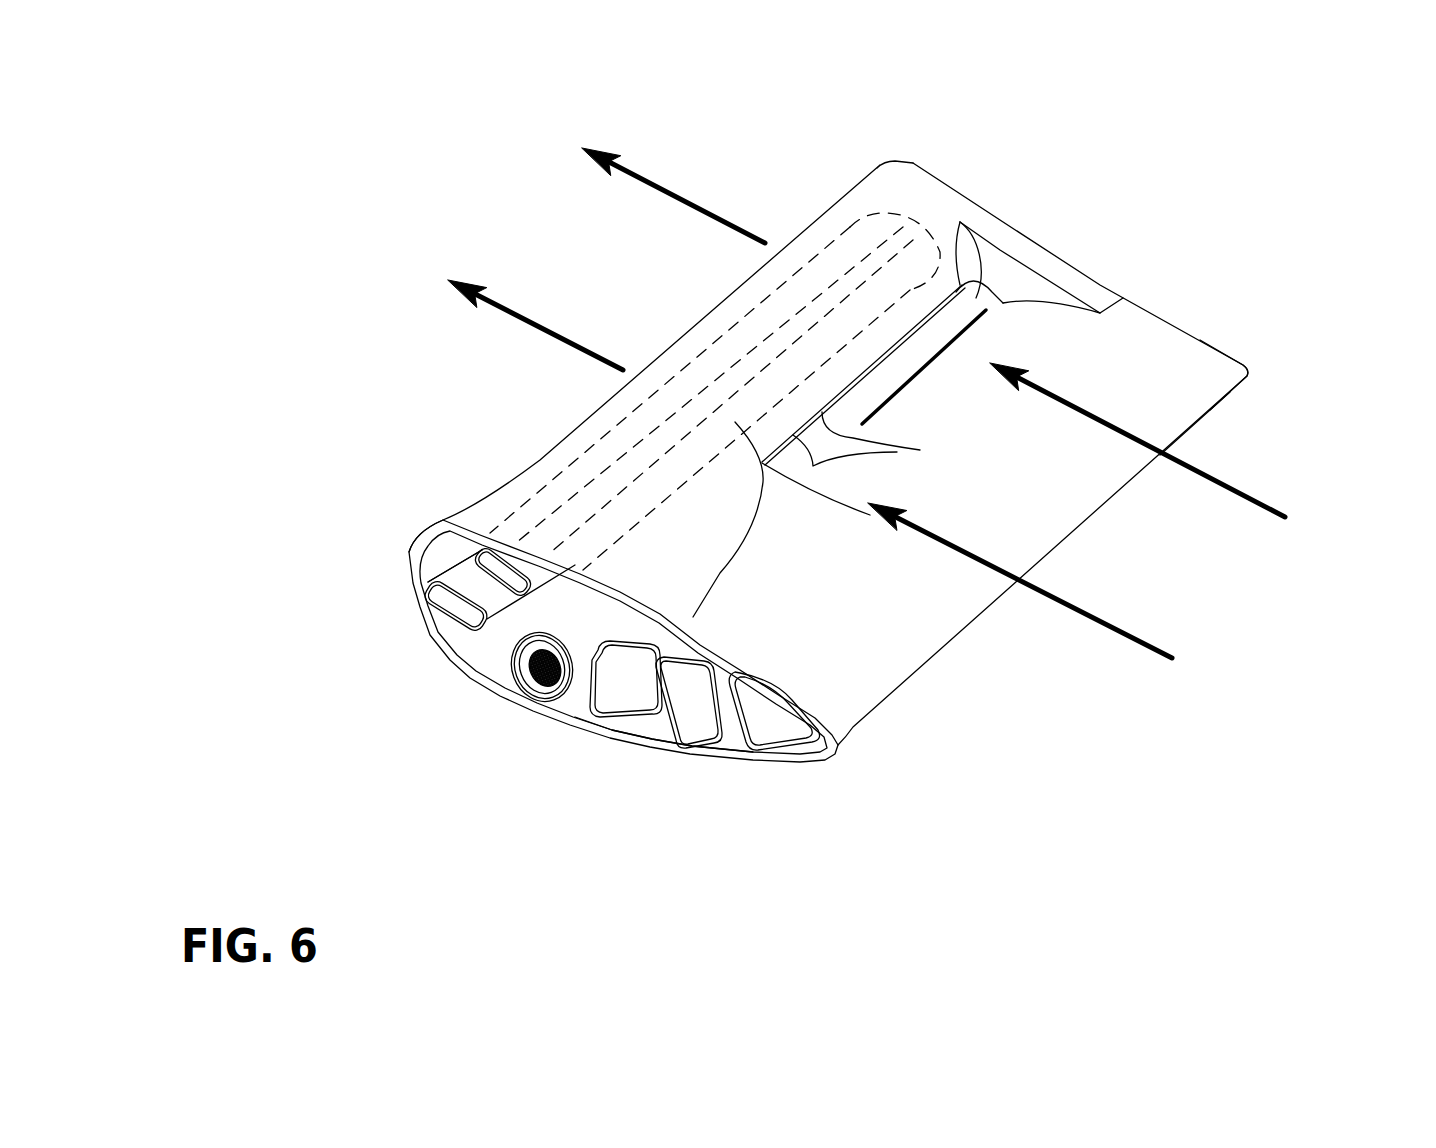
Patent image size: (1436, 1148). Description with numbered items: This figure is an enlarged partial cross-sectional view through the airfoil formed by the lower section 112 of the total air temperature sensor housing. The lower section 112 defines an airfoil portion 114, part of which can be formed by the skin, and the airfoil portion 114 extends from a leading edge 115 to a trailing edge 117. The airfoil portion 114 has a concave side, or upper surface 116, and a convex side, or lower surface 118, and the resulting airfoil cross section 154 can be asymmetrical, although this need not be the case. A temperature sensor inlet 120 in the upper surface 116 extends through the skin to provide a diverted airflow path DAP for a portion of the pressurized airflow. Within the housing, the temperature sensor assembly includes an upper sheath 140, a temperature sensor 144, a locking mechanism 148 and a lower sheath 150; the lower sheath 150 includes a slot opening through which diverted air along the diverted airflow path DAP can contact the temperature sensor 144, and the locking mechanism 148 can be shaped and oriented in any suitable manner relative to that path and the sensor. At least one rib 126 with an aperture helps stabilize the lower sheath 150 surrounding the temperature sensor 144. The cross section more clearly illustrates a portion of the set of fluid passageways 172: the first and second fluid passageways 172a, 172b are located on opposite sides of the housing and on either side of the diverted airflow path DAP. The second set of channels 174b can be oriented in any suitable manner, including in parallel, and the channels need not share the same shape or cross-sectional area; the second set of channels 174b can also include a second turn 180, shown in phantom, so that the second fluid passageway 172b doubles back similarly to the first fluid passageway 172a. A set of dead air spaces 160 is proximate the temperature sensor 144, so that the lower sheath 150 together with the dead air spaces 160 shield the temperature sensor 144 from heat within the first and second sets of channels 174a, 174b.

The lower section 112 is at (1008, 641).
The airfoil portion 114 is at (1210, 358).
The leading edge 115 is at (1207, 417).
The upper surface 116 is at (1155, 363).
The trailing edge 117 is at (862, 180).
The lower surface 118 is at (797, 768).
The temperature sensor inlet 120 is at (892, 315).
The rib 126 is at (822, 412).
The upper sheath 140 is at (538, 686).
The temperature sensor 144 is at (953, 313).
The locking mechanism 148 is at (562, 690).
The lower sheath 150 is at (985, 287).
The airfoil cross section 154 is at (1128, 226).
The set of dead air spaces 160 is at (612, 706).
The set of fluid passageways 172 is at (355, 760).
The first fluid passageway 172a is at (662, 753).
The second fluid passageway 172b is at (440, 645).
The first set of channels 174a is at (687, 727).
The second set of channels 174b is at (450, 597).
The second turn 180 is at (908, 212).
The diverted airflow path DAP is at (1100, 620).